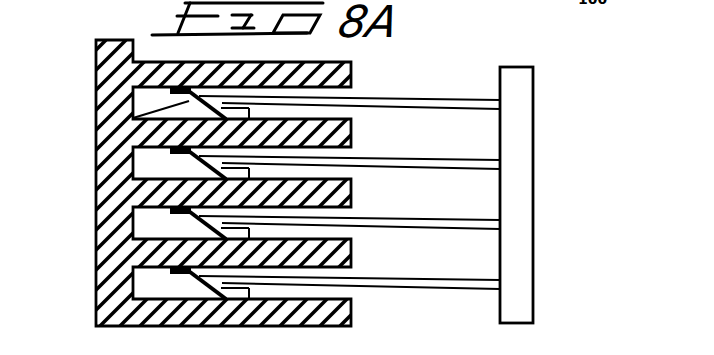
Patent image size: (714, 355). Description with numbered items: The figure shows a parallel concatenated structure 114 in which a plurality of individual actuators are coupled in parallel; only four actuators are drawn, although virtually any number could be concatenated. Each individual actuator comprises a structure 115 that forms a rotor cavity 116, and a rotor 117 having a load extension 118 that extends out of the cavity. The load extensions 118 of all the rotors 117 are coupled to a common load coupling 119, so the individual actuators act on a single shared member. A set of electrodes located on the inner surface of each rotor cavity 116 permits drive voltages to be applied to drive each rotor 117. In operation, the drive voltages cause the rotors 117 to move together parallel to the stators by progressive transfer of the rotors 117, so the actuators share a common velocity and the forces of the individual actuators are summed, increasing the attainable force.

The parallel concatenated structure 114 is at (556, 186).
The structure 115 is at (97, 203).
The rotor cavity 116 is at (352, 113).
The rotor 117 is at (100, 122).
The load extension 118 is at (402, 99).
The common load coupling 119 is at (534, 112).